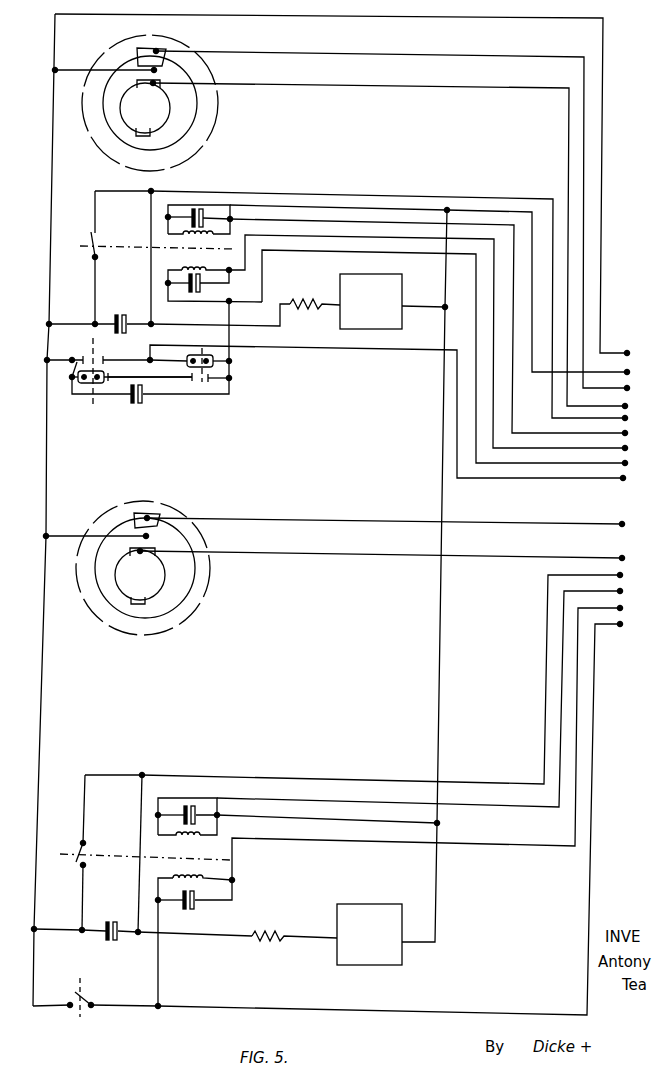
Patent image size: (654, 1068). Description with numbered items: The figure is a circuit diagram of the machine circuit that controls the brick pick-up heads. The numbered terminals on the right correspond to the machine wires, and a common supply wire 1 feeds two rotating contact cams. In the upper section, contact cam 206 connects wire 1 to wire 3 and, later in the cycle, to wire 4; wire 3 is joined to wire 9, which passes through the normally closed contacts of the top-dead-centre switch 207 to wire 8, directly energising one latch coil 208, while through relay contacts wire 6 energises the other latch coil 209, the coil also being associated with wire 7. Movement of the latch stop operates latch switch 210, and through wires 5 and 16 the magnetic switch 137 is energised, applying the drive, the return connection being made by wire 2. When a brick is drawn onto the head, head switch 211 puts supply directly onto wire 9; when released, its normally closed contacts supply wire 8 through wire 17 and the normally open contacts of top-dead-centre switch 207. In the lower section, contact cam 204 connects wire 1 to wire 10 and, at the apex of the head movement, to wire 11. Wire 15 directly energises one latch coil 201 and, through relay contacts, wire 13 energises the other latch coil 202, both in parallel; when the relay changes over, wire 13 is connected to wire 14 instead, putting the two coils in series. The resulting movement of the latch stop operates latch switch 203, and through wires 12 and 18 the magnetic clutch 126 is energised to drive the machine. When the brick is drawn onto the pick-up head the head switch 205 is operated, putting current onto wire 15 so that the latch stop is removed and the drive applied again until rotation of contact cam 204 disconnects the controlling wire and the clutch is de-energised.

The wire No. 1 is at (160, 70).
The wire No. 2 is at (409, 570).
The wire No. 3 is at (152, 48).
The wire No. 4 is at (150, 86).
The wire No. 5 is at (346, 307).
The wire No. 6 is at (428, 320).
The wire No. 7 is at (425, 346).
The wire No. 8 is at (397, 361).
The wire No. 9 is at (373, 413).
The wire No. 10 is at (347, 512).
The wire No. 11 is at (386, 559).
The wire No. 12 is at (366, 761).
The wire No. 13 is at (404, 709).
The wire No. 14 is at (419, 762).
The wire No. 15 is at (366, 815).
The wire No. 16 is at (315, 295).
The wire No. 17 is at (146, 367).
The wire No. 18 is at (294, 926).
The magnetic clutch 126 is at (356, 960).
The magnetic switch 137 is at (350, 331).
The latch coil 201 is at (212, 888).
The latch coil 202 is at (200, 838).
The latch switch 203 is at (72, 866).
The contact cam 204 is at (150, 590).
The head switch 205 is at (85, 1013).
The contact cam 206 is at (165, 110).
The top-dead-centre switch 207 is at (203, 385).
The latch coil 208 is at (232, 284).
The latch coil 209 is at (195, 240).
The latch switch 210 is at (82, 250).
The head switch 211 is at (68, 367).